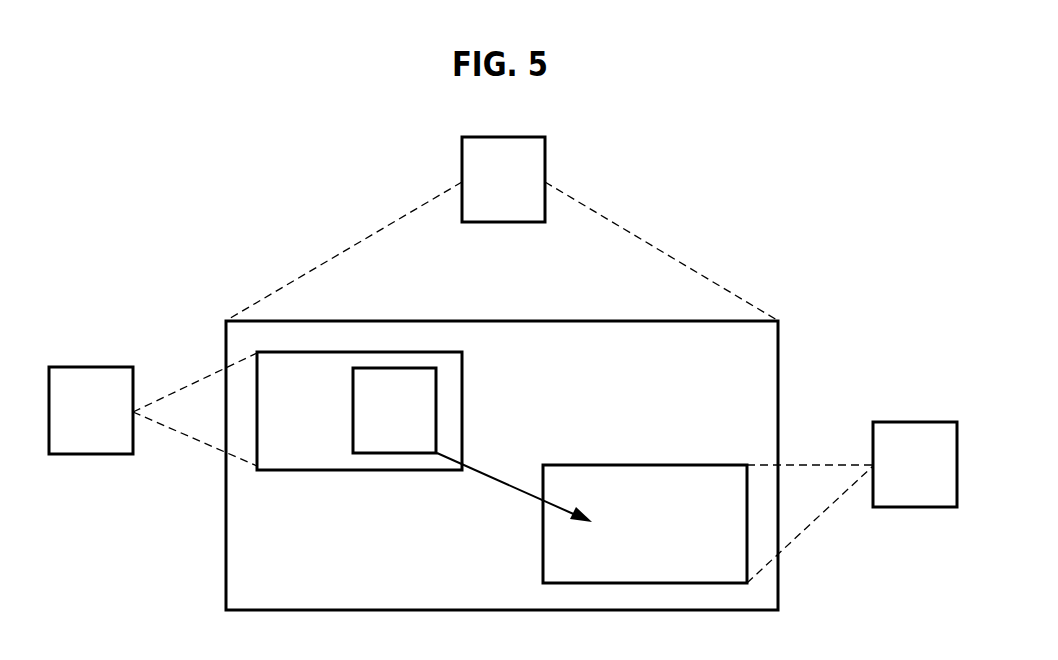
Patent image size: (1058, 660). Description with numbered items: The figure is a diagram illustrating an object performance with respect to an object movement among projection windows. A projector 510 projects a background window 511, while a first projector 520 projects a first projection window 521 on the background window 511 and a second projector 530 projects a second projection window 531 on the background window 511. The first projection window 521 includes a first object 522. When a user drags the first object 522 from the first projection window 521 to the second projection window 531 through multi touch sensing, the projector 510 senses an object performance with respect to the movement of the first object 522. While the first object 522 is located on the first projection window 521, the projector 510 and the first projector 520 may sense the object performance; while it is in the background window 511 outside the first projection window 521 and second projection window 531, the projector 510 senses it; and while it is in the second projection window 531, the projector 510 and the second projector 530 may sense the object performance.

The projector 510 is at (502, 228).
The background window 511 is at (502, 465).
The first projector 520 is at (153, 409).
The first projection window 521 is at (359, 411).
The first object 522 is at (472, 445).
The second projector 530 is at (852, 502).
The second projection window 531 is at (645, 524).